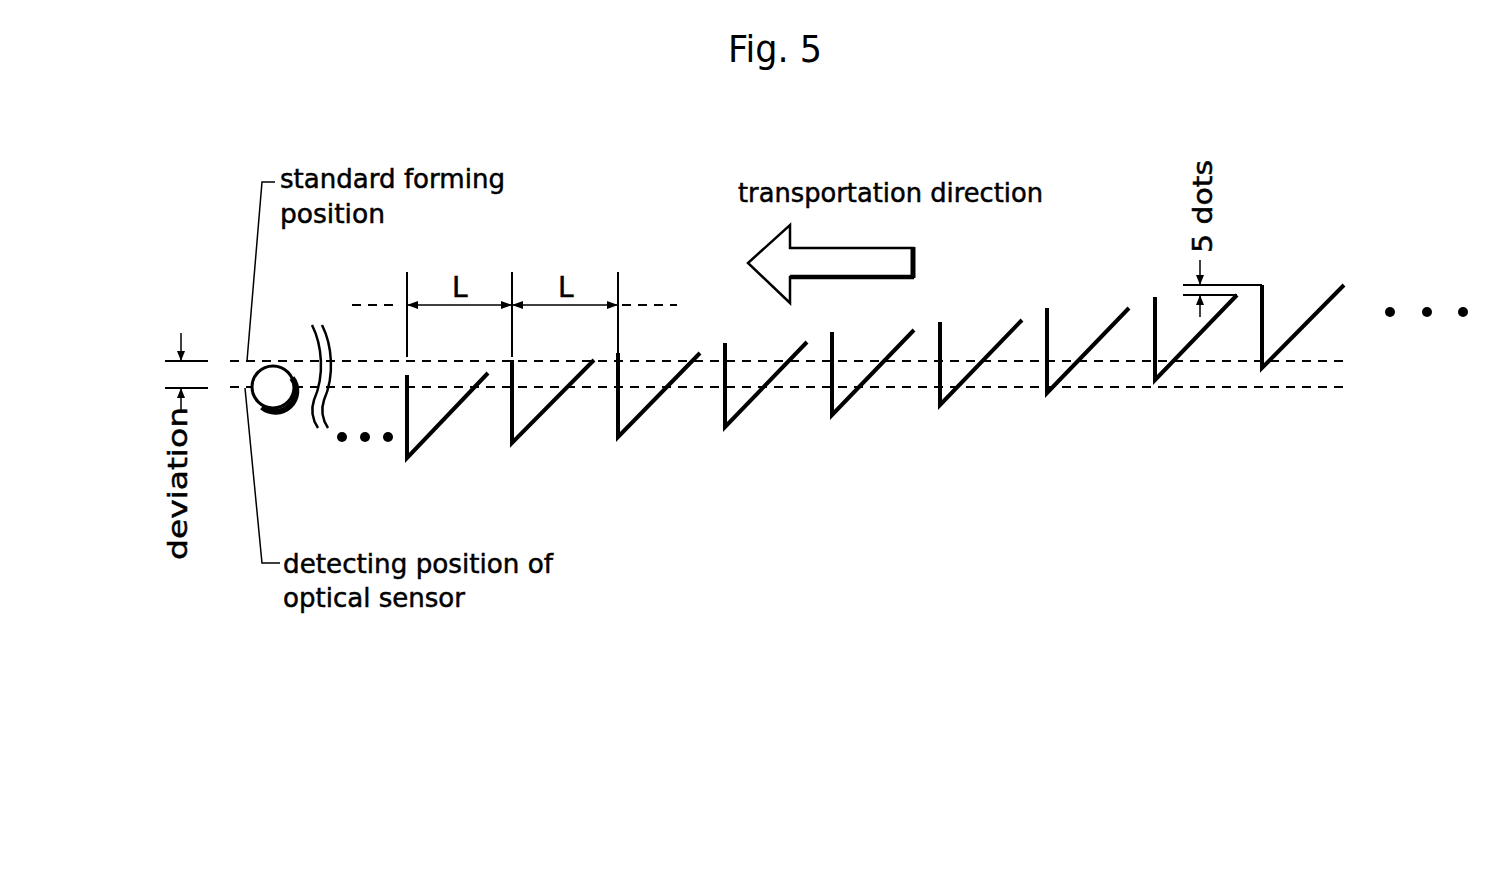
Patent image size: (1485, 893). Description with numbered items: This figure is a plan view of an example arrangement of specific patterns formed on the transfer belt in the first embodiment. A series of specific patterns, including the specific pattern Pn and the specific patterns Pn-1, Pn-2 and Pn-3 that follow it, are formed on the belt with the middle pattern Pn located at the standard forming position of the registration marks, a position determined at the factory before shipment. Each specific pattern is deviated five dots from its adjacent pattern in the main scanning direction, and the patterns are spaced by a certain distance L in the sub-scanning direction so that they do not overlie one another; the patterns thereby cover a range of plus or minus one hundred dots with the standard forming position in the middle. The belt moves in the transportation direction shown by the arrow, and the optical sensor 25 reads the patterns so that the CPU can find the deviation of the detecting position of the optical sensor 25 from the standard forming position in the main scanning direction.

The optical sensor 25 is at (278, 408).
The specific pattern Pn is at (958, 387).
The specific pattern Pn-1 is at (1065, 375).
The specific pattern Pn-2 is at (1173, 362).
The specific pattern Pn-3 is at (1282, 347).